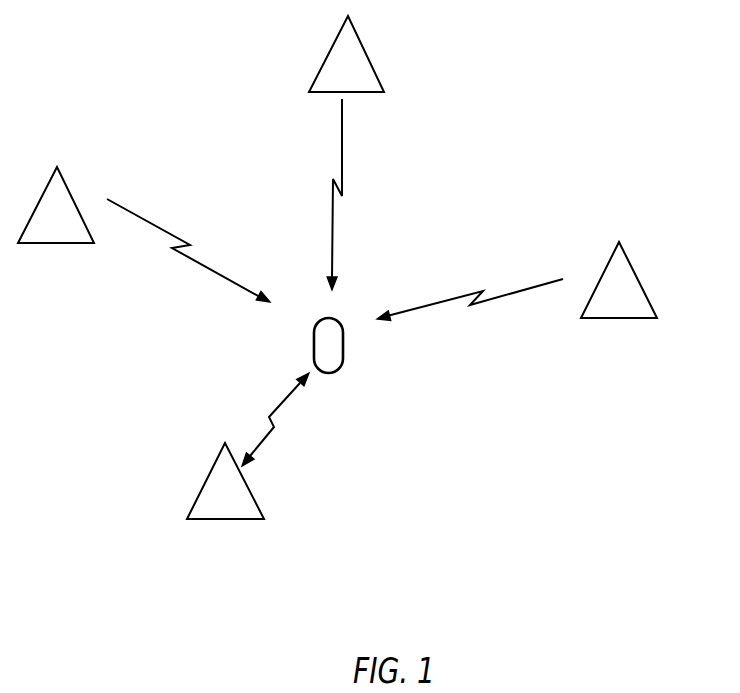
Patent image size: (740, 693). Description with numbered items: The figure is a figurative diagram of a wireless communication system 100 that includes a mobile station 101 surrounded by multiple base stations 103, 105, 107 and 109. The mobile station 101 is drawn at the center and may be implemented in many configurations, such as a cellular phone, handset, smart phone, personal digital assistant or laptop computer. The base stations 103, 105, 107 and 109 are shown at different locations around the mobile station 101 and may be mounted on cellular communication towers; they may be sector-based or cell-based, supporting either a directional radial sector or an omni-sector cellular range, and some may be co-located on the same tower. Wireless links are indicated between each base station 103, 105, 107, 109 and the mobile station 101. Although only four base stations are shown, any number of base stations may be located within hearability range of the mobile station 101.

The wireless communication system 100 is at (493, 175).
The mobile station 101 is at (333, 373).
The base station 103 is at (240, 493).
The base station 105 is at (70, 214).
The base station 107 is at (362, 65).
The base station 109 is at (635, 290).